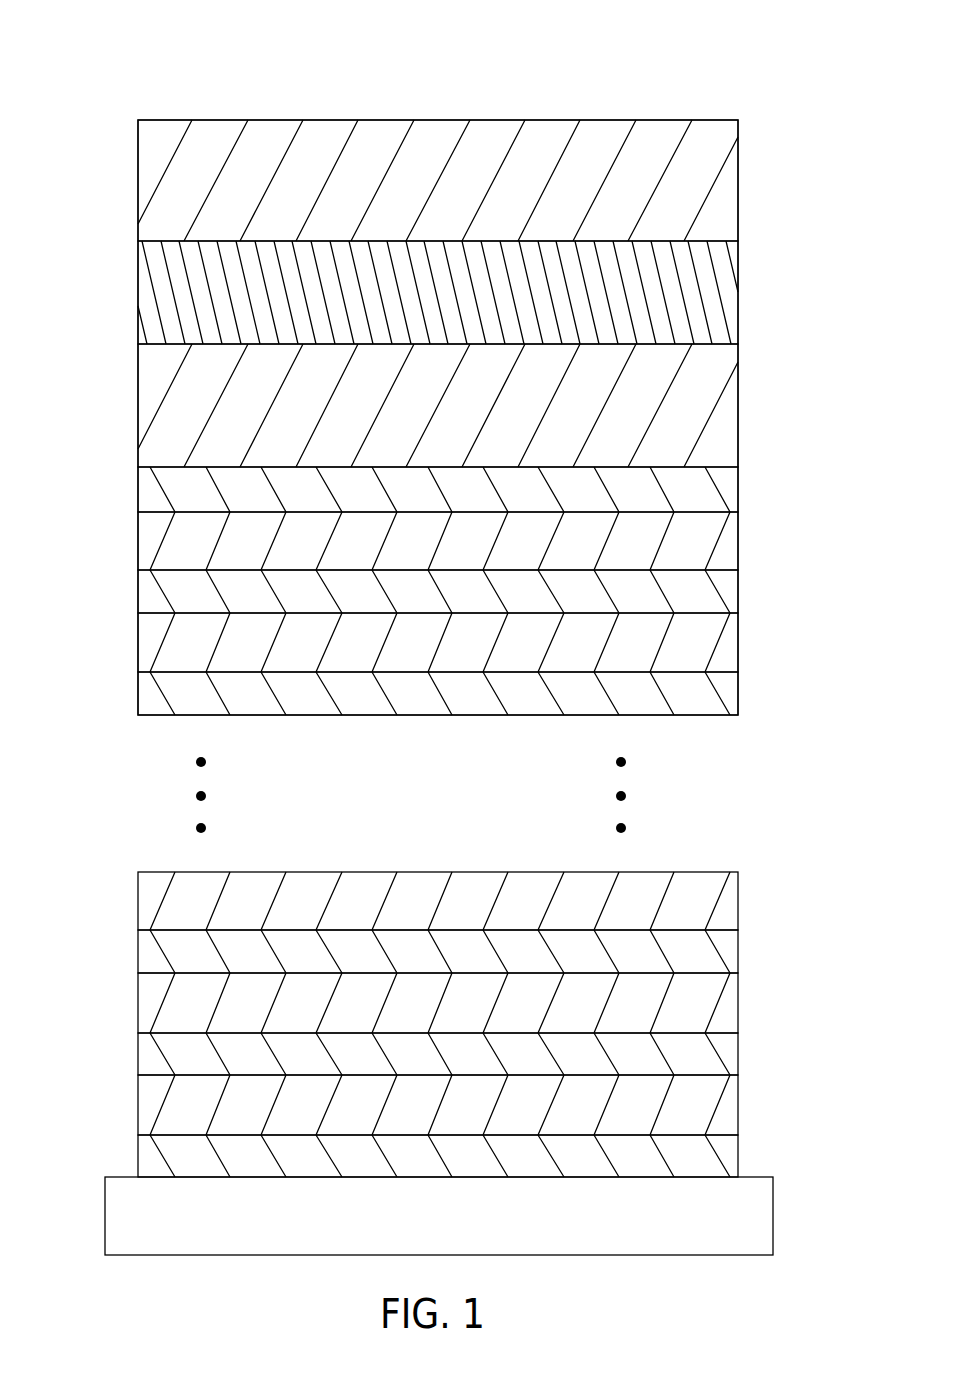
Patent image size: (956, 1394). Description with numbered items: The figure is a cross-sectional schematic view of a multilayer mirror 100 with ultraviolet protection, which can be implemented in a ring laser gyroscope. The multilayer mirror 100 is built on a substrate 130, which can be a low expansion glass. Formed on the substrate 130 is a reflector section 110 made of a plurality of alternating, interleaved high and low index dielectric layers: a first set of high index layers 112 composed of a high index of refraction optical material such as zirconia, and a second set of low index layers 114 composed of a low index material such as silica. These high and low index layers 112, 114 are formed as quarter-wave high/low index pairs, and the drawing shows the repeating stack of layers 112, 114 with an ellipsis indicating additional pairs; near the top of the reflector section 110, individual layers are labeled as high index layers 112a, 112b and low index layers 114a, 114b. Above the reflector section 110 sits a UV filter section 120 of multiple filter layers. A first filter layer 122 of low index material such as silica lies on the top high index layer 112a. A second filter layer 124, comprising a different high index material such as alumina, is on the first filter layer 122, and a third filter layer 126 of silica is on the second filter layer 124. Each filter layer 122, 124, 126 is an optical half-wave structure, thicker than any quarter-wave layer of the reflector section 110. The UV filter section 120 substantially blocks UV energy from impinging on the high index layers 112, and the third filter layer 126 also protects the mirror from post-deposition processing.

The multilayer mirror 100 is at (760, 68).
The reflector section 110 is at (123, 467).
The high index layers 112 is at (732, 692).
The top high index layer 112a is at (732, 488).
The second quantum well layer 112b is at (732, 591).
The low index layers 114 is at (732, 911).
The first barrier layer 114a is at (732, 541).
The second barrier layer 114b is at (732, 642).
The UV filter section 120 is at (123, 120).
The first filter layer 122 is at (732, 412).
The second filter layer 124 is at (732, 294).
The third filter layer 126 is at (732, 182).
The substrate 130 is at (760, 1222).